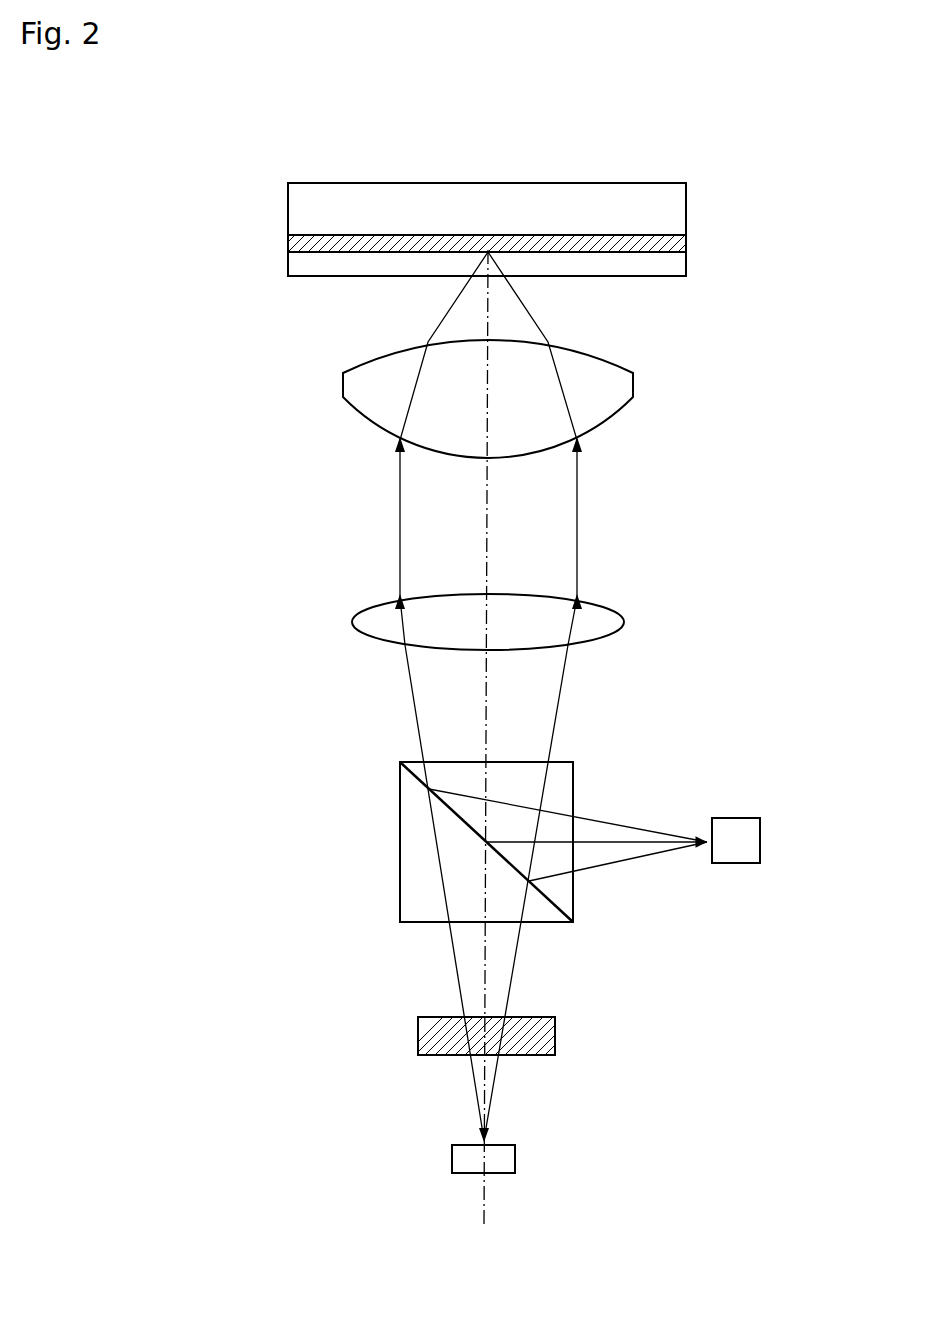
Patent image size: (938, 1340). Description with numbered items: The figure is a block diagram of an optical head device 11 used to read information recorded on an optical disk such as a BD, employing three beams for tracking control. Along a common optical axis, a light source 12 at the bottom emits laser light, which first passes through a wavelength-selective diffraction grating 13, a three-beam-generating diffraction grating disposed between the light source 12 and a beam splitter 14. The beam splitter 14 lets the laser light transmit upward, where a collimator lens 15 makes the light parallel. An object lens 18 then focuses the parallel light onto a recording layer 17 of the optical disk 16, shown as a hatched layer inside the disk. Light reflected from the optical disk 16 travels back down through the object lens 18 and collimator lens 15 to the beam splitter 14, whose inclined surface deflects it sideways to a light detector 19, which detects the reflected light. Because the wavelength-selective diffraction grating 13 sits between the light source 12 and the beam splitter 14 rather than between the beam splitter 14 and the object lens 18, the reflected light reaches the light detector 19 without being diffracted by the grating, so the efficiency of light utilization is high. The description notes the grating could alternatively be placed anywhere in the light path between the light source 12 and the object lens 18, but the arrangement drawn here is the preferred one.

The optical head device 11 is at (162, 845).
The light source 12 is at (462, 1158).
The wavelength-selective diffraction grating 13 is at (428, 1040).
The beam splitter 14 is at (415, 803).
The collimator lens 15 is at (372, 618).
The optical disk 16 is at (603, 183).
The recording layer 17 is at (684, 244).
The object lens 18 is at (350, 390).
The light detector 19 is at (729, 826).